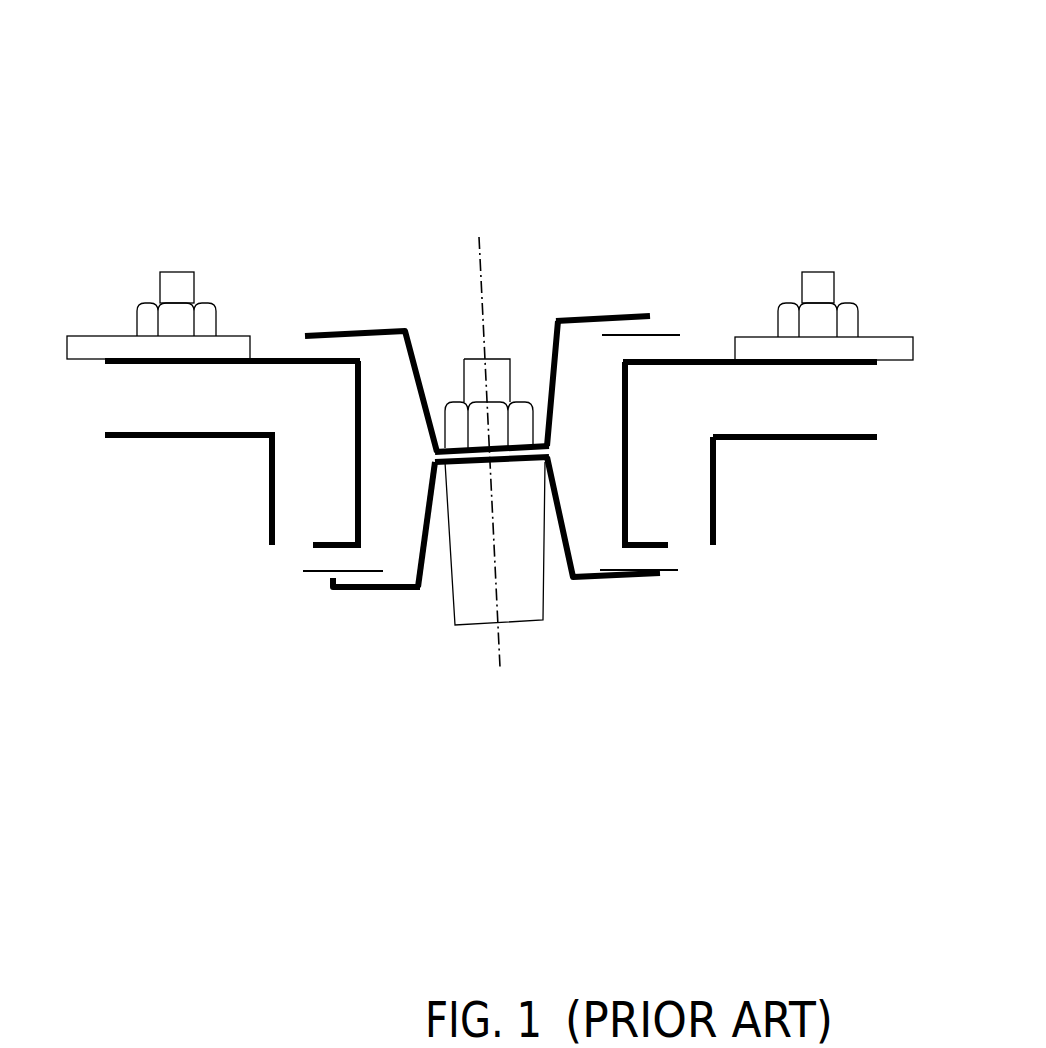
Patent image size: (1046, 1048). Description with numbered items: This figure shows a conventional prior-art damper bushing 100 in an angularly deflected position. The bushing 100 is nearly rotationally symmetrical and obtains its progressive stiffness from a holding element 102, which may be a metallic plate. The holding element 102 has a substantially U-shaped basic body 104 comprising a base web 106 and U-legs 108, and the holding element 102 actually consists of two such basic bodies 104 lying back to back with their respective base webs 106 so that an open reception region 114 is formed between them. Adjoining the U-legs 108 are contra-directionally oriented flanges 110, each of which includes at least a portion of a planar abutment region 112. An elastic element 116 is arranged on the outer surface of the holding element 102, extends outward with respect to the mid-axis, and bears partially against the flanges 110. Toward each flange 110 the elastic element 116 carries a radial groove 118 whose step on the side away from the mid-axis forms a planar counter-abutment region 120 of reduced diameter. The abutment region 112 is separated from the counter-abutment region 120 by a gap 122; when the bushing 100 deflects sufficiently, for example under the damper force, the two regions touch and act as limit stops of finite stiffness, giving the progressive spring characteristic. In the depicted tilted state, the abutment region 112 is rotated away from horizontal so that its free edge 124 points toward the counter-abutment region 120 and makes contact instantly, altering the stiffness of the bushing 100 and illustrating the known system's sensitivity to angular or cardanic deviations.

The damper bushing 100 is at (280, 70).
The holding element 102 is at (590, 288).
The U-shaped basic body 104 is at (472, 316).
The base web 106 is at (520, 462).
The U-legs 108 is at (556, 325).
The flange 110 is at (367, 590).
The abutment region 112 is at (630, 314).
The reception region 114 is at (524, 658).
The elastic element 116 is at (372, 366).
The radial groove 118 is at (385, 586).
The counter-abutment region 120 is at (657, 332).
The gap 122 is at (321, 583).
The free edge 124 is at (333, 592).